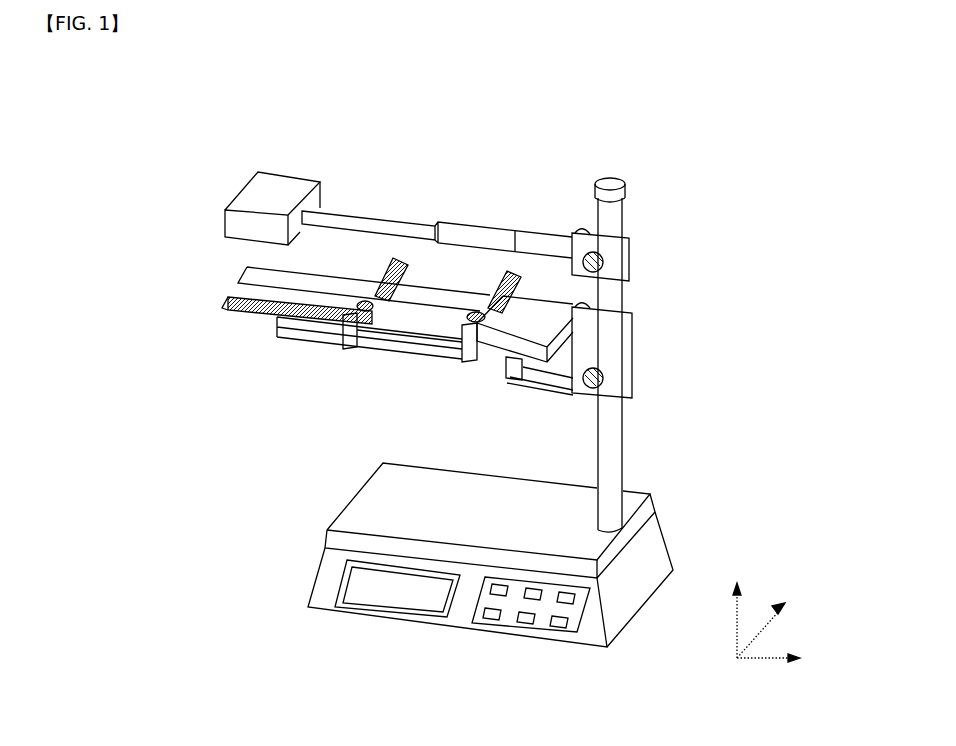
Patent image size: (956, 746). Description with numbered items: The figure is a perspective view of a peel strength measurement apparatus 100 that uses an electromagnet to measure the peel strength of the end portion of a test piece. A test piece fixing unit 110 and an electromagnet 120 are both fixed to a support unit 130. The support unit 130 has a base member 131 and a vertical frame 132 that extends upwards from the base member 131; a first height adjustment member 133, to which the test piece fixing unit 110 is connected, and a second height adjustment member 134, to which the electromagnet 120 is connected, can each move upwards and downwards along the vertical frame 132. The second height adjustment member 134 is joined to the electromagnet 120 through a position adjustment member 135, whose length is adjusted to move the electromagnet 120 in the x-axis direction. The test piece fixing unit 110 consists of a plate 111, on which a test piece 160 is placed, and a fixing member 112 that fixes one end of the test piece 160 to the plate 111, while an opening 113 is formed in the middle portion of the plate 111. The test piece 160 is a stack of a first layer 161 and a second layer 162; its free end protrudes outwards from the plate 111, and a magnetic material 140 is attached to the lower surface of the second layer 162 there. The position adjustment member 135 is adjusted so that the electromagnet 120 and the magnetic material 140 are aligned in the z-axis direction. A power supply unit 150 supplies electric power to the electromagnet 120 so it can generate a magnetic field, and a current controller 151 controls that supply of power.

The peel strength measurement apparatus 100 is at (101, 135).
The test piece fixing unit 110 is at (433, 445).
The plate 111 is at (500, 350).
The fixing member 112 is at (350, 333).
The opening 113 is at (418, 322).
The electromagnet 120 is at (288, 186).
The support unit 130 is at (757, 145).
The base member 131 is at (643, 513).
The vertical frame 132 is at (610, 435).
The first height adjustment member 133 is at (620, 357).
The second height adjustment member 134 is at (630, 255).
The position adjustment member 135 is at (490, 232).
The magnetic material 140 is at (228, 322).
The power supply unit 150 is at (325, 563).
The current controller 151 is at (310, 606).
The test piece 160 is at (138, 234).
The first layer 161 is at (243, 287).
The second layer 162 is at (227, 300).